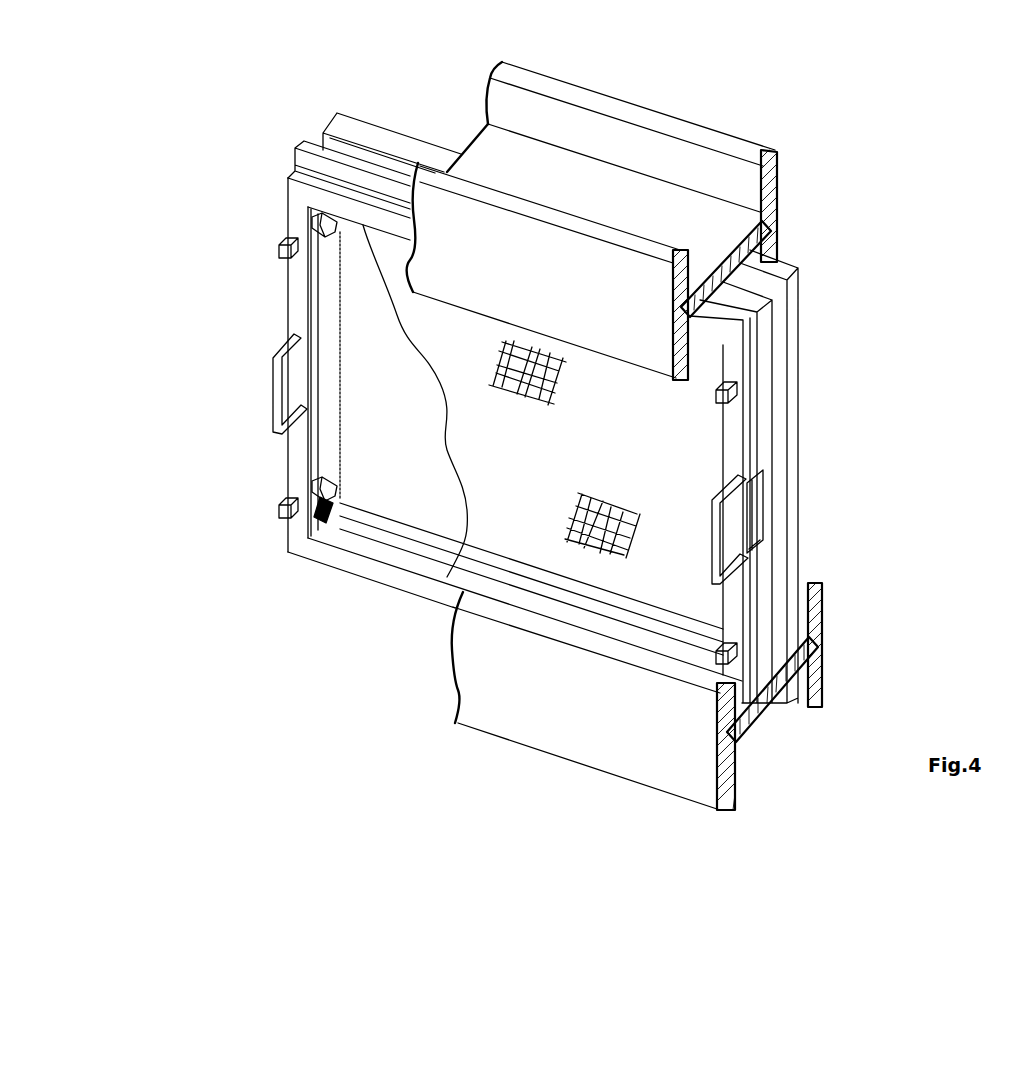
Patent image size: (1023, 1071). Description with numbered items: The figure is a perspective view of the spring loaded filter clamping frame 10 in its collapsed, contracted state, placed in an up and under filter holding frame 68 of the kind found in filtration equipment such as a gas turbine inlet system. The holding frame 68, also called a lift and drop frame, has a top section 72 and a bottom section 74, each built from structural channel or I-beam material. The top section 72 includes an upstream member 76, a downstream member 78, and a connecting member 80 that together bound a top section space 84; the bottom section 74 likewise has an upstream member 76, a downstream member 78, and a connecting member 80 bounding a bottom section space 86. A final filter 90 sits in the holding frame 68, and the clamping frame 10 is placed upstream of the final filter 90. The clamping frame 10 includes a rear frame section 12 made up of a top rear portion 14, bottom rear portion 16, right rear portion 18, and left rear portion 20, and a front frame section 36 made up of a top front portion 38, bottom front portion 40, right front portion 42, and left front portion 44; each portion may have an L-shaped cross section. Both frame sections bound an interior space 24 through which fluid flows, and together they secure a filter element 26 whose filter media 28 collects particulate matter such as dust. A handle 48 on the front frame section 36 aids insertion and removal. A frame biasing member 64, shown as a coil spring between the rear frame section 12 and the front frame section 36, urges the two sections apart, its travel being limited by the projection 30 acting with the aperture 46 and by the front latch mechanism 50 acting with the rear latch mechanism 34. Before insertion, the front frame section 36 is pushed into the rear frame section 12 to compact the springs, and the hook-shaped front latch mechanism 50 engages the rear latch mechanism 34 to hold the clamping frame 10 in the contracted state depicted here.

The spring loaded filter clamping frame 10 is at (243, 320).
The rear frame section 12 is at (342, 385).
The top rear portion 14 is at (306, 157).
The bottom rear portion 16 is at (432, 522).
The right rear portion 18 is at (767, 333).
The left rear portion 20 is at (342, 348).
The interior space 24 is at (428, 426).
The filter element 26 is at (586, 600).
The filter media 28 is at (577, 456).
The projection 30 is at (760, 518).
The rear latch mechanism 34 is at (330, 236).
The front frame section 36 is at (300, 458).
The top front portion 38 is at (302, 176).
The bottom front portion 40 is at (390, 578).
The right front portion 42 is at (752, 380).
The left front portion 44 is at (297, 205).
The aperture 46 is at (751, 486).
The handle 48 is at (275, 387).
The front latch mechanism 50 is at (282, 244).
The frame biasing member 64 is at (322, 525).
The up and under filter holding frame 68 is at (598, 77).
The top section 72 is at (652, 110).
The bottom section 74 is at (548, 748).
The upstream member 76 is at (697, 257).
The downstream member 78 is at (780, 172).
The connecting member 80 is at (750, 238).
The top section space 84 is at (744, 296).
The bottom section space 86 is at (754, 722).
The final filter 90 is at (802, 405).